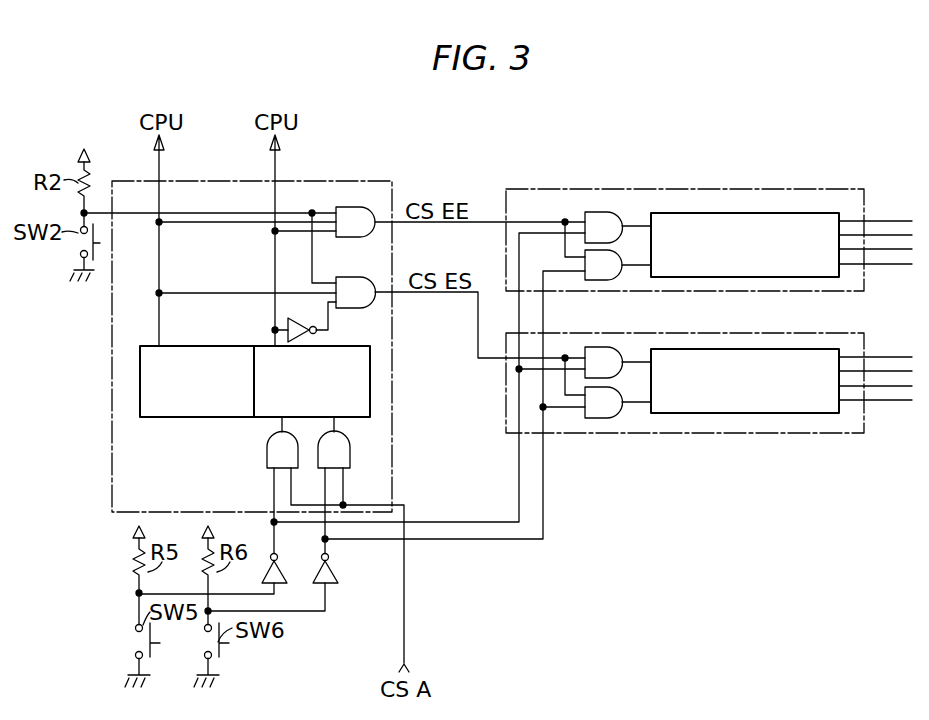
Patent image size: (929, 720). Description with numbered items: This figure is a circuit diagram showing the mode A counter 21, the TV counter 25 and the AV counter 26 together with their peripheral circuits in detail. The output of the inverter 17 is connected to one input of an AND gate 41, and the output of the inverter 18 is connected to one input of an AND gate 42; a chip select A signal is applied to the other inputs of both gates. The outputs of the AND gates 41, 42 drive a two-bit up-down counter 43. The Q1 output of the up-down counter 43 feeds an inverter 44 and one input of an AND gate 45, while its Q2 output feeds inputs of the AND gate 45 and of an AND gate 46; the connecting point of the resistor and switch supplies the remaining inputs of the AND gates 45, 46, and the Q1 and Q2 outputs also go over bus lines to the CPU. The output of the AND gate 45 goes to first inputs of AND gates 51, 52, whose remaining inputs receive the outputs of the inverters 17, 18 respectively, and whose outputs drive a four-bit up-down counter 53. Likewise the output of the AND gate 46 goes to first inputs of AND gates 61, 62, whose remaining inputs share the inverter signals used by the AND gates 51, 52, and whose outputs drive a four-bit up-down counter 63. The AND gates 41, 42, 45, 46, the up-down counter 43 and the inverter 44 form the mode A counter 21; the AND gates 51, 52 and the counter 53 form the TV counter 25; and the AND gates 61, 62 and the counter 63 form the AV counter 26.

The mode A counter 21 is at (313, 179).
The AND gate 45 is at (357, 207).
The AND gate 46 is at (355, 278).
The inverter 44 is at (287, 327).
The two-bit up-down counter 43 is at (370, 378).
The AND gate 41 is at (267, 457).
The AND gate 42 is at (350, 460).
The inverter 17 is at (283, 571).
The inverter 18 is at (338, 575).
The TV counter 25 is at (768, 187).
The AND gate 51 is at (600, 212).
The AND gate 52 is at (603, 281).
The four-bit up-down counter 53 is at (800, 214).
The AV counter 26 is at (735, 333).
The AND gate 61 is at (603, 347).
The AND gate 62 is at (600, 420).
The four-bit up-down counter 63 is at (793, 349).